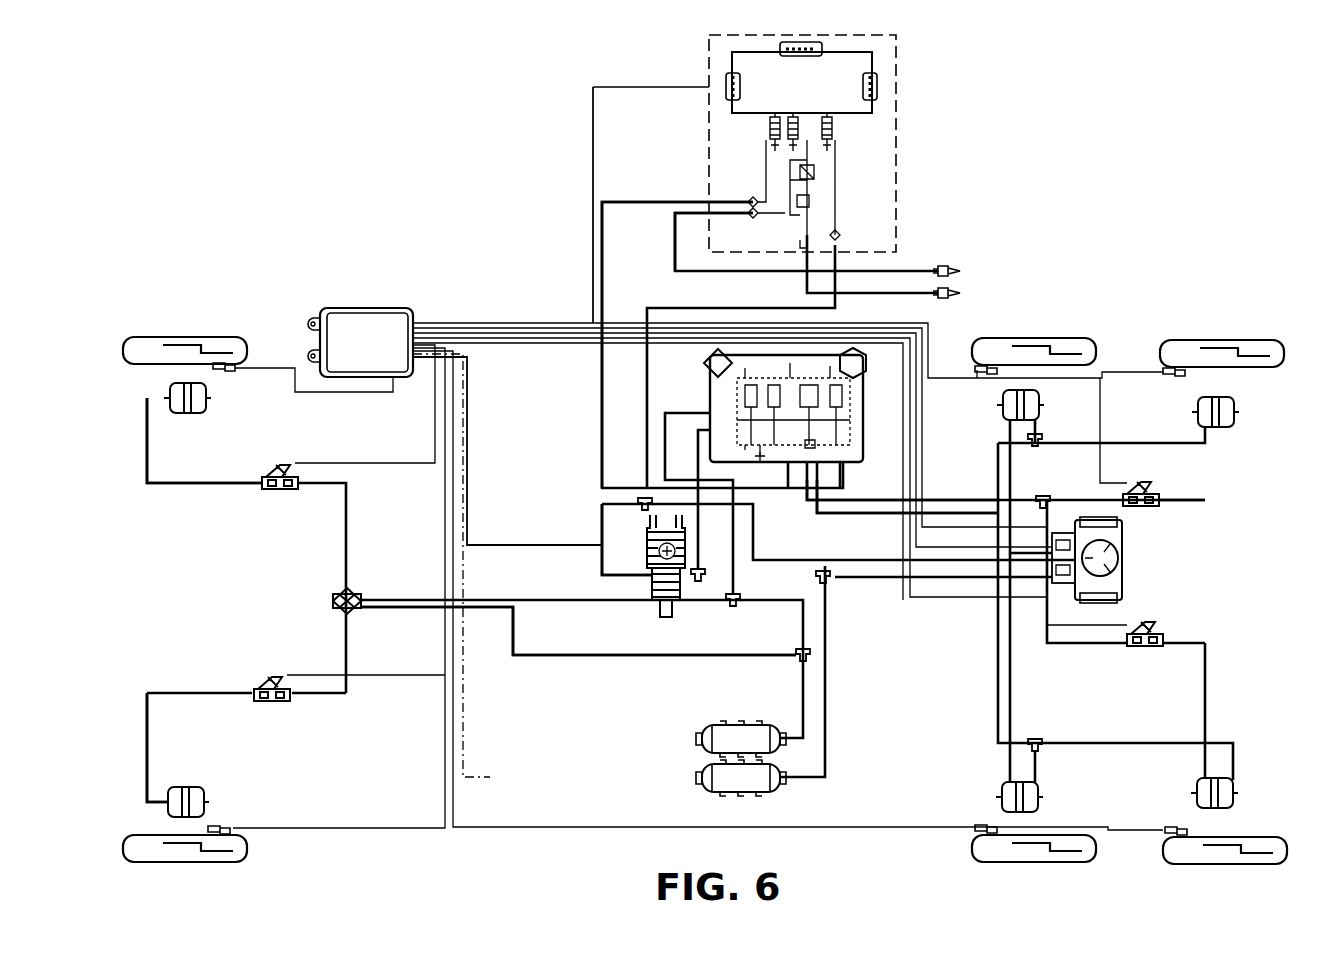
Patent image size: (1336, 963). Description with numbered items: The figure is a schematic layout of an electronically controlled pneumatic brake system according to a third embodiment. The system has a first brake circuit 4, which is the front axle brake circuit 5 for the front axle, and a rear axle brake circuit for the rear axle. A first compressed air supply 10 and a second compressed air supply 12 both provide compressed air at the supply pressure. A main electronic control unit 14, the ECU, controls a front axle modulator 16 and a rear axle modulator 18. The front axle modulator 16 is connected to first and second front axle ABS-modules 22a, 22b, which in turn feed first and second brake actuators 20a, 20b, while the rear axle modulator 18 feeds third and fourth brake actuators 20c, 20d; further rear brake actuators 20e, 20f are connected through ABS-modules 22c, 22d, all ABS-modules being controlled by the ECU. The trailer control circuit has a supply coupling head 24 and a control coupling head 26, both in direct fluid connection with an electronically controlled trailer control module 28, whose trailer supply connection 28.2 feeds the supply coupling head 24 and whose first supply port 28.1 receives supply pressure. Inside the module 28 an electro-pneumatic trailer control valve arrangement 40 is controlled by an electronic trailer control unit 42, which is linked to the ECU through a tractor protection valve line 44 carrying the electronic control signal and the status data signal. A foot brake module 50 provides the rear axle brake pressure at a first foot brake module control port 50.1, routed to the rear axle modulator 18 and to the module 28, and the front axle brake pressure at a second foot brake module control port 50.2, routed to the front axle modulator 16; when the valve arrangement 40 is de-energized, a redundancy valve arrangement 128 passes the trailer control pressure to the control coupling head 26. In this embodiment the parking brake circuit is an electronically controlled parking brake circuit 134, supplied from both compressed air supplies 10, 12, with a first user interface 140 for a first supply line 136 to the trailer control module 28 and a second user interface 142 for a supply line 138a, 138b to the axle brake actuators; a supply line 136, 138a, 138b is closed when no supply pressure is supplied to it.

The first brake circuit 4 is at (200, 582).
The front axle brake circuit 5 is at (178, 600).
The first compressed air supply 10 is at (696, 740).
The second compressed air supply 12 is at (696, 780).
The main electronic control unit 14 is at (360, 308).
The front axle modulator 16 is at (333, 600).
The rear axle modulator 18 is at (1122, 560).
The first brake actuator 20a is at (186, 413).
The second brake actuator 20b is at (185, 787).
The third brake actuator 20c is at (1043, 405).
The fourth brake actuator 20d is at (1043, 800).
The brake actuator 20e is at (1238, 412).
The brake actuator 20f is at (1238, 793).
The first front axle ABS-module 22a is at (280, 490).
The second front axle ABS-module 22b is at (268, 675).
The ABS-module 22c is at (1145, 507).
The ABS-module 22d is at (1160, 633).
The supply coupling head 24 is at (957, 264).
The control coupling head 26 is at (962, 290).
The electronically controlled trailer control module 28 is at (816, 143).
The first supply port 28.1 is at (708, 200).
The trailer supply connection 28.2 is at (708, 213).
The electro-pneumatic trailer control valve arrangement 40 is at (752, 137).
The electronic trailer control unit 42 is at (872, 70).
The tractor protection valve line 44 is at (593, 130).
The foot brake module 50 is at (690, 552).
The first foot brake module control port 50.1 is at (647, 572).
The second foot brake module control port 50.2 is at (652, 612).
The redundancy valve arrangement 128 is at (848, 137).
The electronically controlled parking brake circuit 134 is at (876, 393).
The first supply line 136 is at (602, 420).
The supply line 138a is at (862, 512).
The supply line 138b is at (862, 520).
The first user interface 140 is at (710, 368).
The second user interface 142 is at (867, 356).